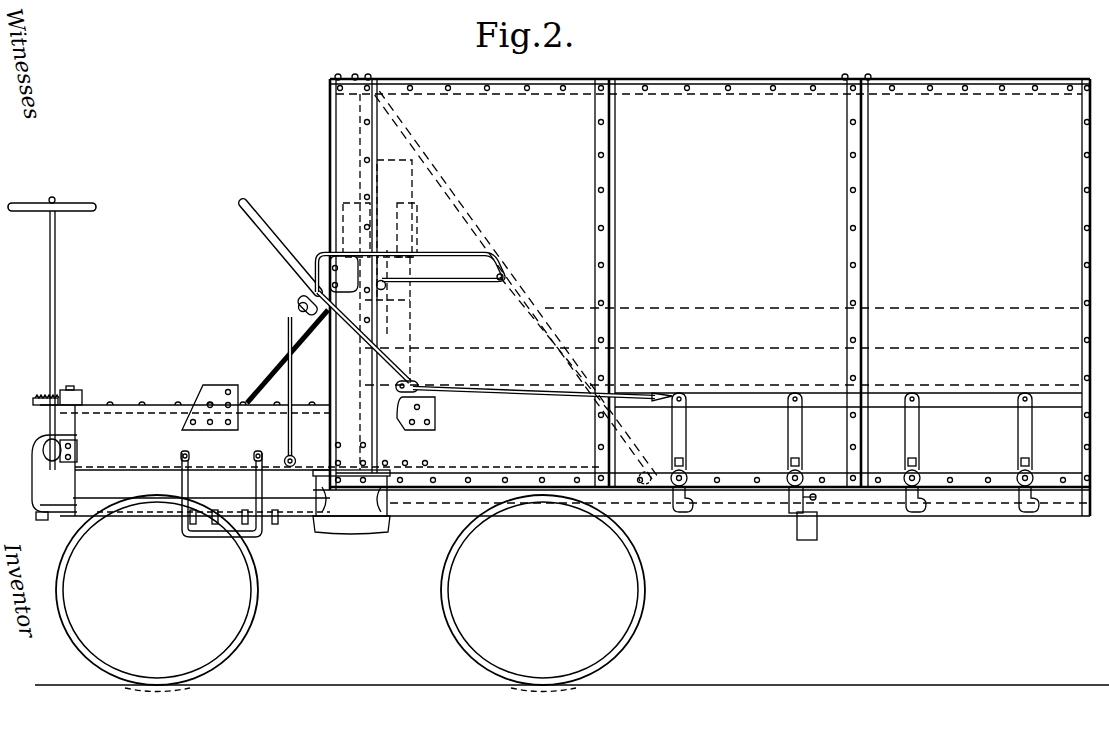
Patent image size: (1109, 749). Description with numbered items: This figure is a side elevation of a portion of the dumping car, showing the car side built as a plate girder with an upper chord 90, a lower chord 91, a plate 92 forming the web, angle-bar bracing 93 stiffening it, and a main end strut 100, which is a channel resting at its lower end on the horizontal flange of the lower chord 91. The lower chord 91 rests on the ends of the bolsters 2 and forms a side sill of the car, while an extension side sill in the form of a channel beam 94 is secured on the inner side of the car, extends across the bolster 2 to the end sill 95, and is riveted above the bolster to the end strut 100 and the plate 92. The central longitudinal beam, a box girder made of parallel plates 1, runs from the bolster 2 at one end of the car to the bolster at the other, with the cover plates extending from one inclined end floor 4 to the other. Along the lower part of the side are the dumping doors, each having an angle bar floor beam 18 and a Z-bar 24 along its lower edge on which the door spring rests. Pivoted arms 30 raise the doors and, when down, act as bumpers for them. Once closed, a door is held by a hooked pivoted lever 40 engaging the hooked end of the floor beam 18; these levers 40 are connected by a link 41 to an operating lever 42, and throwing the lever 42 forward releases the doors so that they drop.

The parallel plates 1 is at (575, 460).
The bolster 2 is at (351, 502).
The inclined end floor 4 is at (492, 247).
The angle bar floor beam 18 is at (672, 511).
The Z-bar 24 is at (701, 498).
The arm 30 is at (800, 526).
The hooked pivoted lever 40 is at (793, 425).
The link 41 is at (534, 411).
The operating lever 42 is at (273, 239).
The upper chord 90 is at (794, 84).
The lower chord 91 is at (935, 481).
The plate 92 is at (727, 297).
The angle-bar bracing 93 is at (608, 171).
The channel beam 94 is at (133, 428).
The end sill 95 is at (50, 422).
The main end strut 100 is at (350, 186).